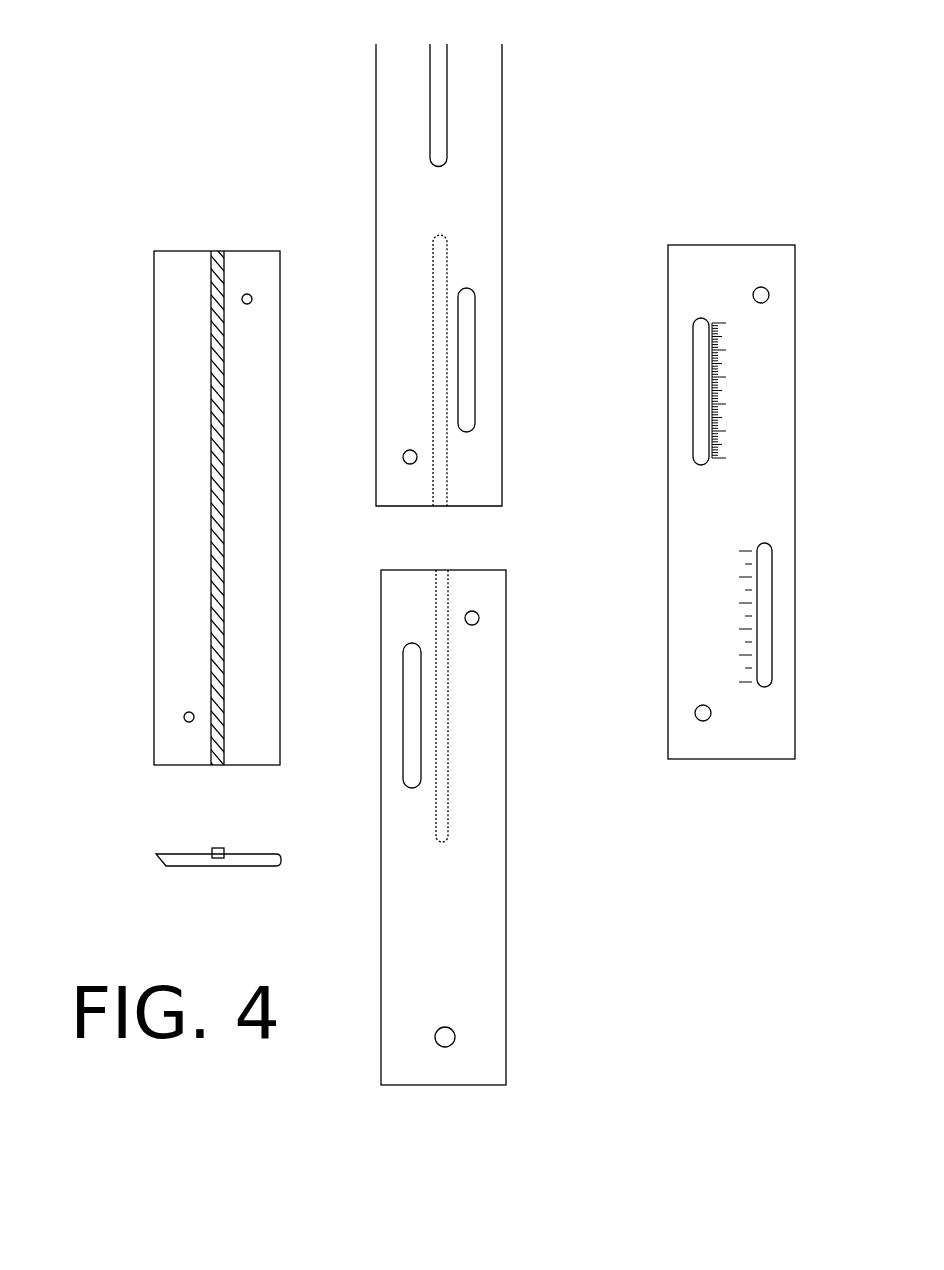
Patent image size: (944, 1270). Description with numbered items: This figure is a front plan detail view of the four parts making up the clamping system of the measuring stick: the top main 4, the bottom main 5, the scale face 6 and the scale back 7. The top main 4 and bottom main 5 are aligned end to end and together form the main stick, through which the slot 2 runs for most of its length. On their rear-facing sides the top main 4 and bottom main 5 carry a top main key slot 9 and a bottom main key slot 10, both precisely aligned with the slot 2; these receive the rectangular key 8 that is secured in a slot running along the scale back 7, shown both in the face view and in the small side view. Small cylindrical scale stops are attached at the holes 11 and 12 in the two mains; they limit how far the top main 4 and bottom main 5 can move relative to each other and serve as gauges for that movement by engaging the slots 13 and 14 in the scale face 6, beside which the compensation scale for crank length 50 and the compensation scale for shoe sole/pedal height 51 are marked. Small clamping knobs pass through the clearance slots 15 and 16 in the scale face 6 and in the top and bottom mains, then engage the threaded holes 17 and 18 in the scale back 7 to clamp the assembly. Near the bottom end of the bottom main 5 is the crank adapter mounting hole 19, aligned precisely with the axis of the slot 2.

The slot 2 is at (438, 138).
The top main 4 is at (400, 112).
The bottom main 5 is at (443, 922).
The scale face 6 is at (737, 495).
The scale back 7 is at (180, 497).
The rectangular key 8 is at (213, 397).
The top main key slot 9 is at (437, 360).
The bottom main key slot 10 is at (440, 640).
The hole 11 is at (403, 457).
The hole 12 is at (480, 618).
The slot 13 is at (698, 358).
The slot 14 is at (762, 627).
The clearance slot 15 is at (466, 320).
The clearance slot 16 is at (411, 706).
The threaded hole 17 is at (248, 293).
The threaded hole 18 is at (184, 717).
The crank adapter mounting hole 19 is at (455, 1035).
The compensation scale for crank length 50 is at (742, 380).
The compensation scale for shoe sole/pedal height 51 is at (716, 610).